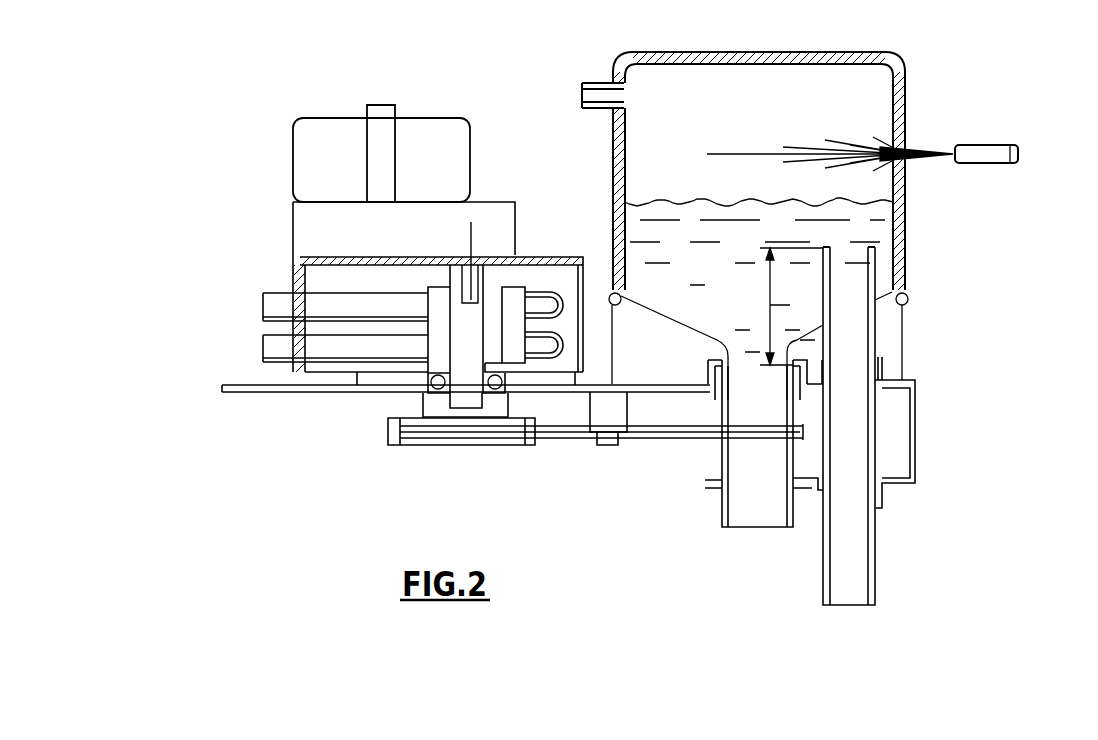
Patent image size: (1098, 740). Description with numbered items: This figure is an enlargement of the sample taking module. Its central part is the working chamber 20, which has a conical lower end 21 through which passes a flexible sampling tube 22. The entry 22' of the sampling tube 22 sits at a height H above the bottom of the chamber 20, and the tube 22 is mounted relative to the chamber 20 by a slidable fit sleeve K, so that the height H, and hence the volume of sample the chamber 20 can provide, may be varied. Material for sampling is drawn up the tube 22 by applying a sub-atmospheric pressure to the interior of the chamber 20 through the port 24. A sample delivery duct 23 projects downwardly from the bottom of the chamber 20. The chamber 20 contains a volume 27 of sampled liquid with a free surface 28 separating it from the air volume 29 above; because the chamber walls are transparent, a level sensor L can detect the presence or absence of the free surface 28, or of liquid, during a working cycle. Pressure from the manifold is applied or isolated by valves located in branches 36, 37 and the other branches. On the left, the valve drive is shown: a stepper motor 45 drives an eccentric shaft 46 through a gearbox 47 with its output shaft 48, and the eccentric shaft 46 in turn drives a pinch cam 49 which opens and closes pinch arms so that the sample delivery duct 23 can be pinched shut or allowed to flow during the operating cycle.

The working chamber 20 is at (857, 57).
The conical lower end 21 is at (695, 330).
The flexible sampling tube 22 is at (893, 412).
The entry of the sampling tube 22' is at (893, 234).
The sample delivery duct 23 is at (723, 503).
The port 24 is at (590, 96).
The volume of sampled liquid 27 is at (638, 242).
The free surface 28 is at (650, 205).
The air volume 29 is at (880, 100).
The branch 36 is at (357, 300).
The branch 37 is at (357, 341).
The stepper motor 45 is at (310, 168).
The eccentric shaft 46 is at (435, 357).
The gearbox 47 is at (310, 237).
The output shaft 48 is at (477, 285).
The pinch cam 49 is at (395, 447).
The height H is at (770, 305).
The slidable fit sleeve K is at (882, 372).
The level sensor L is at (1020, 155).